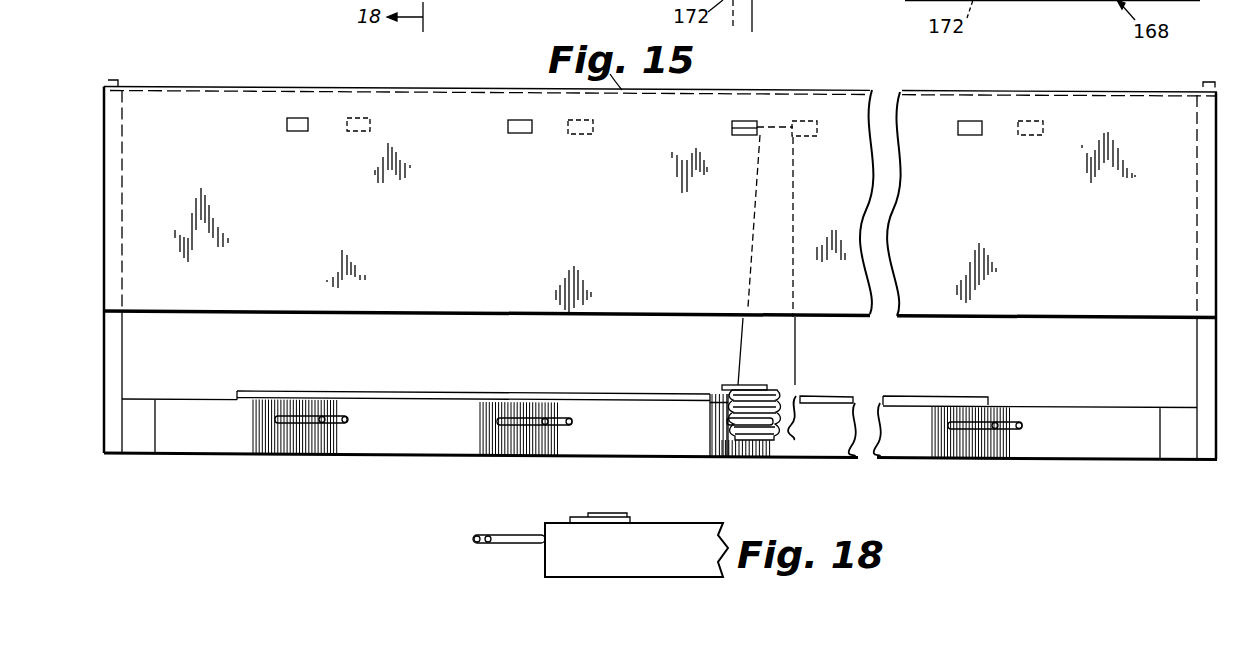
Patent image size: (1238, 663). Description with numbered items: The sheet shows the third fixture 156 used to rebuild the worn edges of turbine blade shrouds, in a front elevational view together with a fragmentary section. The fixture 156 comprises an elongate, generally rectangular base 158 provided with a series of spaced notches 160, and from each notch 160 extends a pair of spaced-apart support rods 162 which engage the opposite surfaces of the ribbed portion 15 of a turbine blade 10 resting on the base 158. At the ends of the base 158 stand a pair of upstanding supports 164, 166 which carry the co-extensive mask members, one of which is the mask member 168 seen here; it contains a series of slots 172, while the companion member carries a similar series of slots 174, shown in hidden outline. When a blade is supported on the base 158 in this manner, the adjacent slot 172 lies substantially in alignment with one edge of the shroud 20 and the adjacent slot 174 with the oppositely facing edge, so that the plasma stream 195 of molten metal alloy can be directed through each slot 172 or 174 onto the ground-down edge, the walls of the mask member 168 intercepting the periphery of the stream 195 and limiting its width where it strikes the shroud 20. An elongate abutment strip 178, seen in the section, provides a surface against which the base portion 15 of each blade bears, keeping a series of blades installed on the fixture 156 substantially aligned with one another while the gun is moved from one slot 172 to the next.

In FIG. 15, the vehicle body assembly 10 is at (743, 328).
In FIG. 15, the ribbed portion 15 is at (788, 402).
In FIG. 15, the shroud 20 is at (775, 123).
In FIG. 15, the third fixture 156 is at (1036, 468).
In FIG. 15, the base 158 is at (425, 452).
In FIG. 18, the base 158 is at (563, 533).
In FIG. 15, the notches 160 is at (713, 395).
In FIG. 15, the support rods 162 is at (335, 415).
In FIG. 18, the support rods 162 is at (502, 540).
In FIG. 15, the upstanding support 164 is at (113, 348).
In FIG. 15, the upstanding support 166 is at (1200, 350).
In FIG. 15, the mask member 168 is at (500, 281).
In FIG. 15, the slots 172 is at (521, 133).
In FIG. 15, the slots 174 is at (580, 135).
In FIG. 15, the abutment strip 178 is at (518, 392).
In FIG. 18, the abutment strip 178 is at (618, 513).
In FIG. 15, the plasma stream 195 is at (748, 15).